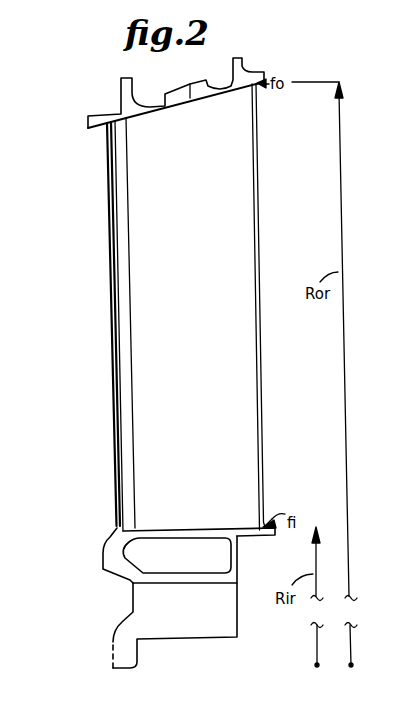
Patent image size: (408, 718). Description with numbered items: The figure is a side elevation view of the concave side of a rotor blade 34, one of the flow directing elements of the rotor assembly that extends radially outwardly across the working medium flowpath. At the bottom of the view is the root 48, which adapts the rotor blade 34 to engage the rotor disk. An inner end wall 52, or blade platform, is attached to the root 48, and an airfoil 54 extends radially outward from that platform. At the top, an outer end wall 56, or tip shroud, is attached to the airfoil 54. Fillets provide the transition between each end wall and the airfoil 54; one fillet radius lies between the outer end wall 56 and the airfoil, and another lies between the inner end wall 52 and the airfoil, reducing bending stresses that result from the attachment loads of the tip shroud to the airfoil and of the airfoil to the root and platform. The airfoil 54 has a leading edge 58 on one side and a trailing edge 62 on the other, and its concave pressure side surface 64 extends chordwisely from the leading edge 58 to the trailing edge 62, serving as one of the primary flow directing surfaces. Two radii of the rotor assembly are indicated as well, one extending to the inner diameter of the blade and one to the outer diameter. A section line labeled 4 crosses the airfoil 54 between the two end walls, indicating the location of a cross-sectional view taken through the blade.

The rotor blade 34 is at (96, 204).
The root 48 is at (194, 625).
The inner end wall 52 is at (243, 535).
The airfoil 54 is at (240, 428).
The outer end wall 56 is at (243, 67).
The leading edge 58 is at (108, 242).
The trailing edge 62 is at (258, 236).
The concave surface 64 is at (197, 218).
The section line 4- 4 is at (142, 331).